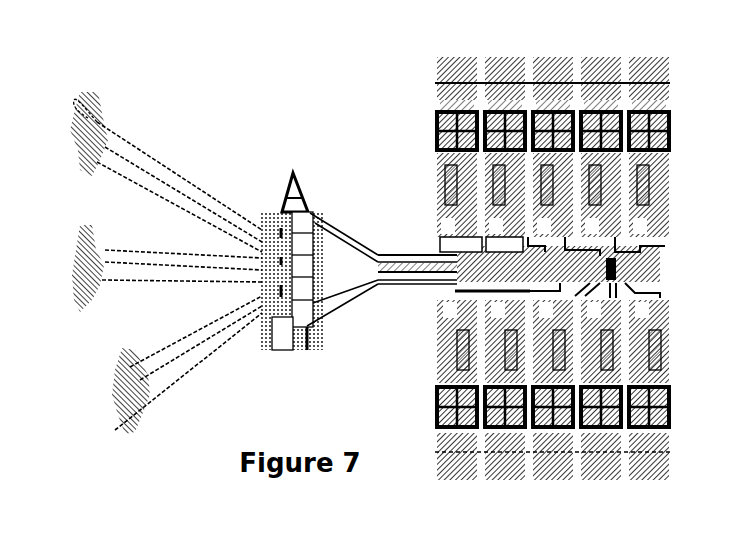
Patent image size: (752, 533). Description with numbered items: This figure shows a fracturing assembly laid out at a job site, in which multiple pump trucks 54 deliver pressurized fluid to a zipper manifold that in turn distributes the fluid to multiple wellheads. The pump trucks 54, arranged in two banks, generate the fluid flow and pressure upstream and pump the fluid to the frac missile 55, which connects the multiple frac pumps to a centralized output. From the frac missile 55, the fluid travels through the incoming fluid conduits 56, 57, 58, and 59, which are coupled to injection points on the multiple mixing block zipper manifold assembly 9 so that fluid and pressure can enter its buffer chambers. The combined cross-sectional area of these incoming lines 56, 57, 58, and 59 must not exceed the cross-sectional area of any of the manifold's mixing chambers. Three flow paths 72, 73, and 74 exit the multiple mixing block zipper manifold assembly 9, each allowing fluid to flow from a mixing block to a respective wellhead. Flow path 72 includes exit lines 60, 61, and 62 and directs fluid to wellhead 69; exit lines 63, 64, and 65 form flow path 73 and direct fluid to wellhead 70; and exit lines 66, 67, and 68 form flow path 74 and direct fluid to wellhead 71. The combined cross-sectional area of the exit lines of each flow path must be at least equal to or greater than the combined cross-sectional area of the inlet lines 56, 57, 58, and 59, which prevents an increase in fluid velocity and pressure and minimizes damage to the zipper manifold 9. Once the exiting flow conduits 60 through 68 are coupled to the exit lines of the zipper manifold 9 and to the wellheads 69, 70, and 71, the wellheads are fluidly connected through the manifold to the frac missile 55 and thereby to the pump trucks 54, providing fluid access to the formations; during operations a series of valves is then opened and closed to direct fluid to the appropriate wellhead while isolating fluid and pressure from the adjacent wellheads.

The multiple mixing block zipper manifold assembly 9 is at (306, 186).
The pump trucks 54 is at (650, 58).
The frac missile 55 is at (668, 265).
The incoming fluid conduit 56 is at (402, 256).
The incoming fluid conduit 57 is at (336, 226).
The incoming fluid conduit 58 is at (393, 274).
The incoming fluid conduit 59 is at (338, 308).
The exit line 60 is at (150, 153).
The exit line 61 is at (155, 178).
The exit line 62 is at (176, 200).
The exit line 63 is at (120, 250).
The exit line 64 is at (152, 265).
The exit line 65 is at (138, 284).
The exit line 66 is at (175, 344).
The exit line 67 is at (218, 330).
The exit line 68 is at (190, 369).
The wellhead 69 is at (98, 118).
The wellhead 70 is at (80, 230).
The wellhead 71 is at (122, 370).
The flow path 72 is at (128, 131).
The flow path 73 is at (108, 305).
The flow path 74 is at (154, 403).